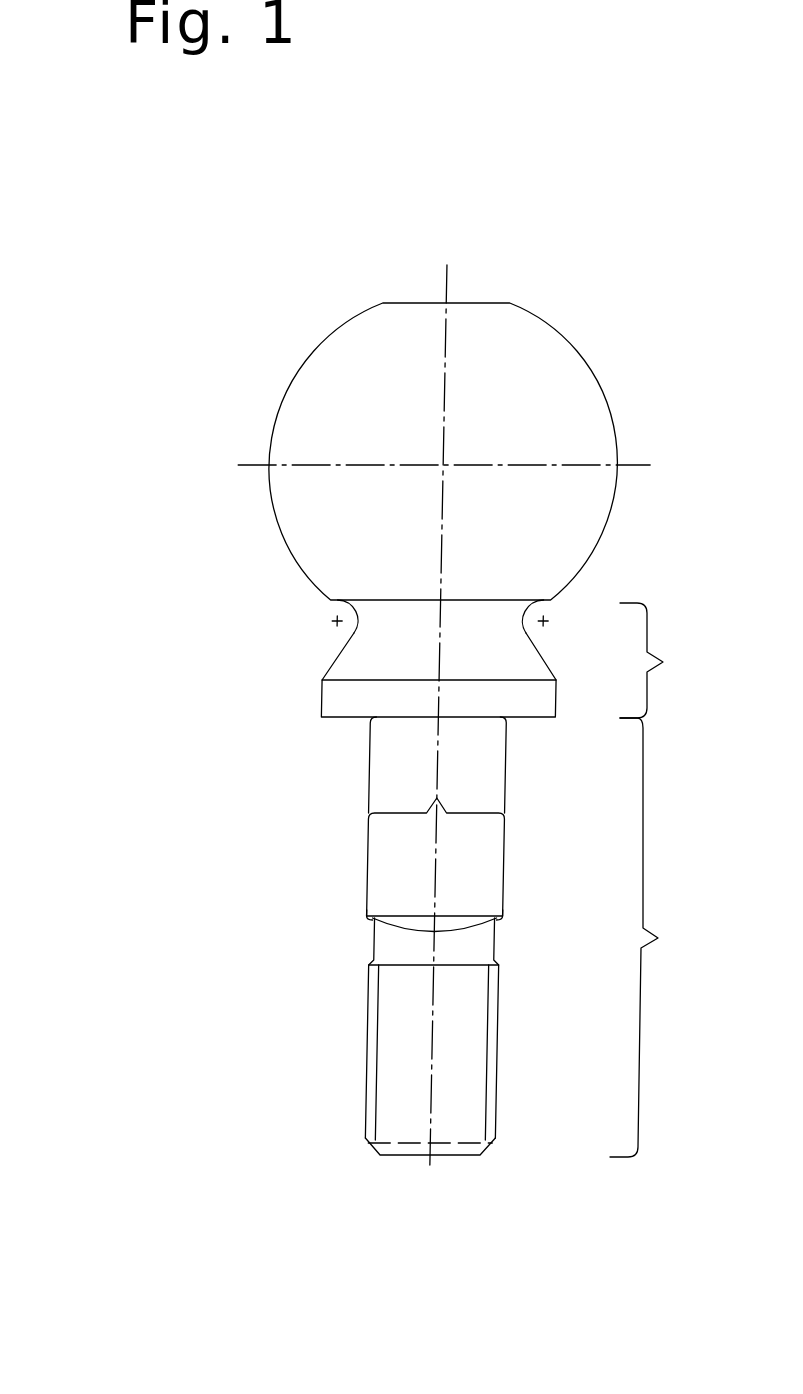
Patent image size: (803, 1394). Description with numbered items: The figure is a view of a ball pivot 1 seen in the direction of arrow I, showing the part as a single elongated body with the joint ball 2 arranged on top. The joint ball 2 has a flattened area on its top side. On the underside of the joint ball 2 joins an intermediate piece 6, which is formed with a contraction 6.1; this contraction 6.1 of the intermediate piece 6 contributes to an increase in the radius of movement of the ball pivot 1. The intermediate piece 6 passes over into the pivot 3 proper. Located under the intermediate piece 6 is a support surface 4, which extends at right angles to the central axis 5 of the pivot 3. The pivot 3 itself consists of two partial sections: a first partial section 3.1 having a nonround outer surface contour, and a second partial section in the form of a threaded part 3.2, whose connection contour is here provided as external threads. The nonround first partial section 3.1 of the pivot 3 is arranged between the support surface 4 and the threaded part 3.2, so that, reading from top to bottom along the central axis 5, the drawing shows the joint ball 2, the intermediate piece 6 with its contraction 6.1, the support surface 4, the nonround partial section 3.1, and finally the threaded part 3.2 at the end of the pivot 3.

The ball pivot 1 is at (202, 719).
The joint ball 2 is at (373, 390).
The pivot 3 is at (536, 937).
The first partial section 3.1 is at (400, 827).
The threaded part 3.2 is at (407, 1053).
The support surface 4 is at (317, 734).
The central axis 5 is at (430, 1170).
The intermediate piece 6 is at (517, 660).
The contraction 6.1 is at (318, 624).